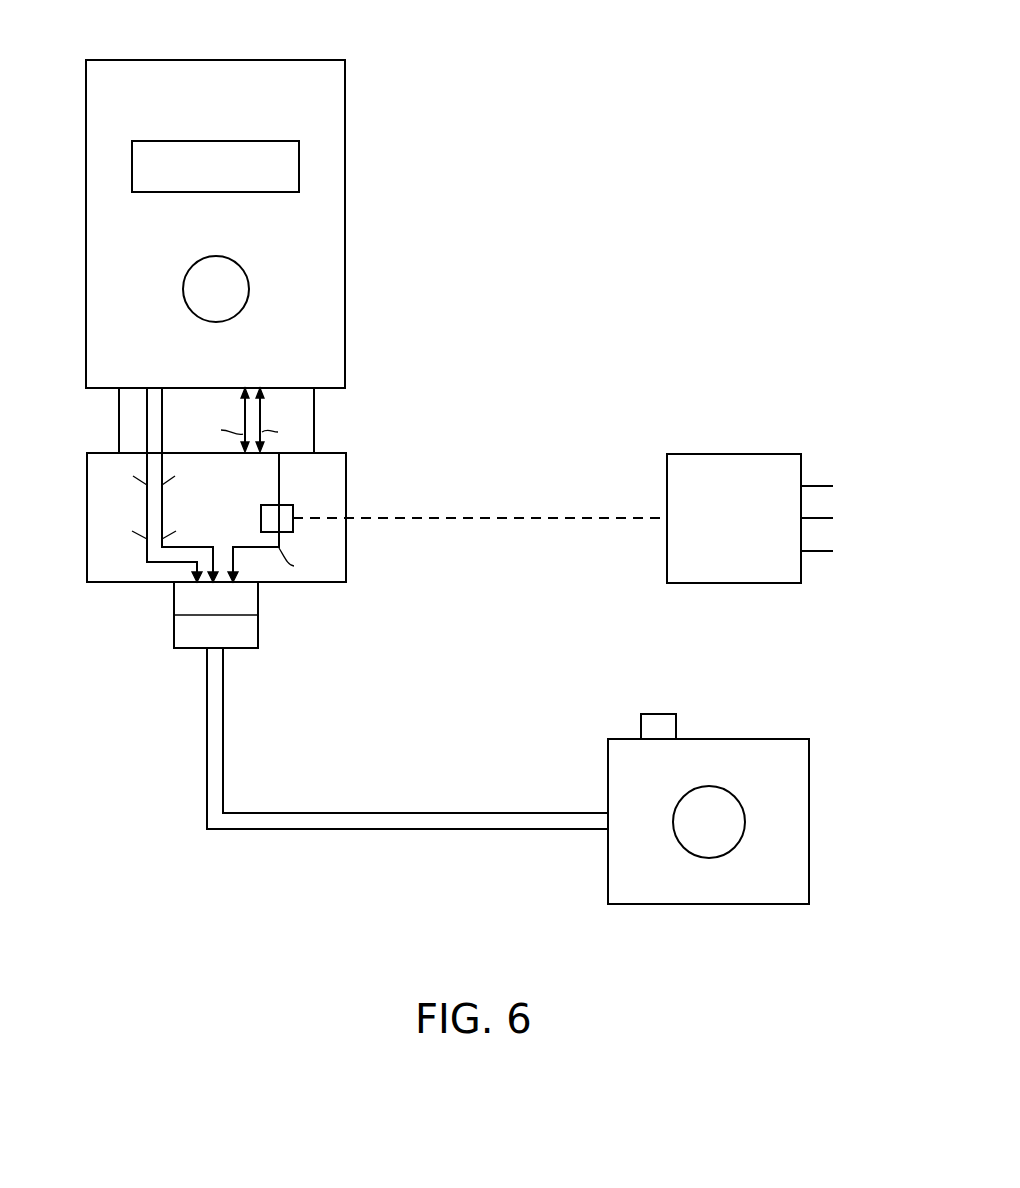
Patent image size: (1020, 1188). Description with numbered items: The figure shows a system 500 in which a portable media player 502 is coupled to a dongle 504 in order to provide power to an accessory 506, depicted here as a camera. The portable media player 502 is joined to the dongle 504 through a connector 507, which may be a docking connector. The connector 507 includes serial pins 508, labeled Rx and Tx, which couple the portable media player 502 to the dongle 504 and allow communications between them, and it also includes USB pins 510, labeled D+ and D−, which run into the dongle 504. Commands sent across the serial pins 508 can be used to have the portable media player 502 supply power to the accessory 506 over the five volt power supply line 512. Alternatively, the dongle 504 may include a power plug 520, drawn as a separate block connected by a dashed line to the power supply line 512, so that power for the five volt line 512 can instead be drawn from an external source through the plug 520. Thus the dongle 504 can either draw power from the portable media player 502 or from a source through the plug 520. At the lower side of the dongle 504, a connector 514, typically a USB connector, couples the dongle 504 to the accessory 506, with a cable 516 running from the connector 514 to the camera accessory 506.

The system 500 is at (346, 932).
The portable media player 502 is at (345, 215).
The dongle 504 is at (346, 565).
The accessory 506 is at (809, 827).
The connector 507 is at (310, 431).
The serial pins 508 is at (262, 423).
The USB pins 510 is at (146, 510).
The 5 volt power supply line 512 is at (288, 506).
The connector 514 is at (258, 615).
The USB cable 516 is at (223, 745).
The power plug 520 is at (743, 583).